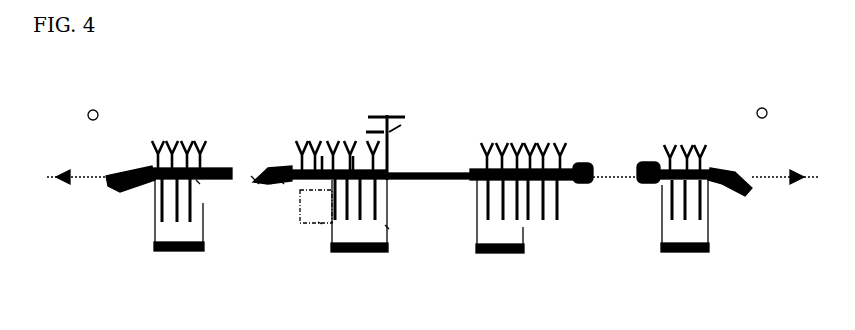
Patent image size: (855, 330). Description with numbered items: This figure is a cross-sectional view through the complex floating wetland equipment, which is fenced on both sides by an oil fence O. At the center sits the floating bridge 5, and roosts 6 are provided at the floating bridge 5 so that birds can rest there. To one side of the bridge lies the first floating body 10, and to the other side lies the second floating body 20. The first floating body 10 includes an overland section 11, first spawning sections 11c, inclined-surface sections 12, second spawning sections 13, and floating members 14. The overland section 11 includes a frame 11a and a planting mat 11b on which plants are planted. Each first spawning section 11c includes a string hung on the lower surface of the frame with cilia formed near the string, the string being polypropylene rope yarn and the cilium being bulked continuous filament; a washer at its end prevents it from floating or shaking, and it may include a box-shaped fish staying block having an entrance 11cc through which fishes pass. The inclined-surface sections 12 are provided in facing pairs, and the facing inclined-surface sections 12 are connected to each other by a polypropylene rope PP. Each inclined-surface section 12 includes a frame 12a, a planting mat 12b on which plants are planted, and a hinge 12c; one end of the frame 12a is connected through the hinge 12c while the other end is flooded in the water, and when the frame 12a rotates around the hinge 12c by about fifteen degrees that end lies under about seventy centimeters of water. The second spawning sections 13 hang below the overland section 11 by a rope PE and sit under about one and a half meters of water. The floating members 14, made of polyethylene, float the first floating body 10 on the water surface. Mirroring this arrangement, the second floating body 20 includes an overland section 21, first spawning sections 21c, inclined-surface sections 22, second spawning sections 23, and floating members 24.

The oil fence O is at (95, 121).
The first floating body 10 is at (273, 199).
The overland section 11 is at (173, 142).
The frame 11a is at (353, 142).
The planting mat 11b is at (322, 142).
The first spawning section 11c is at (153, 224).
The entrance 11cc is at (320, 224).
The inclined-surface section 12 is at (200, 167).
The frame 12a is at (270, 182).
The planting mat 12b is at (257, 182).
The hinge 12c is at (282, 182).
The second spawning section 13 is at (180, 252).
The floating member 14 is at (122, 190).
The polypropylene rope PP is at (253, 178).
The rope PE is at (387, 227).
The roost 6 is at (393, 112).
The floating bridge 5 is at (447, 171).
The second floating body 20 is at (599, 199).
The overland section 21 is at (513, 145).
The first spawning section 21c is at (478, 221).
The inclined-surface section 22 is at (582, 162).
The second spawning section 23 is at (500, 254).
The floating member 24 is at (478, 198).